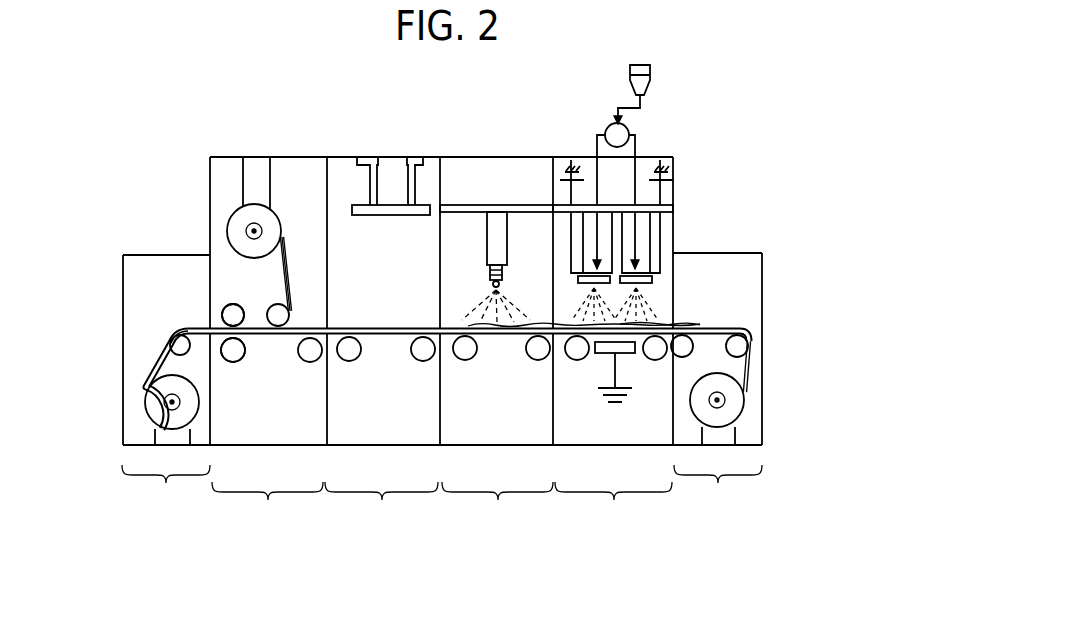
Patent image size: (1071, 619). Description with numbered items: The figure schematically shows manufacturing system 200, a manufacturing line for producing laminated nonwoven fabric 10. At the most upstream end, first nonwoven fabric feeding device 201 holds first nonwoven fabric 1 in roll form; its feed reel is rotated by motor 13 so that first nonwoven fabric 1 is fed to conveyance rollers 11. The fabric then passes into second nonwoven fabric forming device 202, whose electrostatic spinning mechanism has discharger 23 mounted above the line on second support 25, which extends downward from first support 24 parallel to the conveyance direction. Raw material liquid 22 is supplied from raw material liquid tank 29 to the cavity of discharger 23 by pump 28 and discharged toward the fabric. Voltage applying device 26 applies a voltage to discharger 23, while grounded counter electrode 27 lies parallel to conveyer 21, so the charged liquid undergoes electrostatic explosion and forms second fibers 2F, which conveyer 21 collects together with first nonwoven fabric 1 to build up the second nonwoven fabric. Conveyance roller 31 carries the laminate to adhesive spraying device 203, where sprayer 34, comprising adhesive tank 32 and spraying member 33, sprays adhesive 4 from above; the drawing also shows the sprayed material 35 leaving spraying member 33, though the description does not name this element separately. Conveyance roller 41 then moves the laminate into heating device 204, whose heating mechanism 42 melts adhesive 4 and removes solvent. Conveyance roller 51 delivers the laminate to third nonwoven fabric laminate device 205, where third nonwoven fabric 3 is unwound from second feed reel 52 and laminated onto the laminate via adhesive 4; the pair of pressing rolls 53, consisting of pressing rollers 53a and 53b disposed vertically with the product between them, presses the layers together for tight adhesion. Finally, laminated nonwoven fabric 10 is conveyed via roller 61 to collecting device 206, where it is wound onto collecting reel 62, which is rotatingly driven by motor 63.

The manufacturing system 200 is at (203, 134).
The collecting device 206 is at (166, 384).
The third nonwoven fabric laminate device 205 is at (269, 345).
The heating device 204 is at (382, 345).
The adhesive spraying device 203 is at (497, 345).
The second nonwoven fabric forming device 202 is at (613, 508).
The first nonwoven fabric feeding device 201 is at (717, 383).
The laminated nonwoven fabric 10 is at (160, 344).
The roller 61 is at (163, 330).
The collecting reel 62 is at (150, 400).
The motor 63 is at (165, 437).
The second feed reel 52 is at (233, 215).
The first nonwoven fabric 1 is at (285, 240).
The third nonwoven fabric 3 is at (291, 262).
The motor 13 is at (725, 437).
The pair of pressing rolls 53 is at (108, 197).
The pressing roller 53a is at (225, 307).
The pressing roller 53b is at (224, 341).
The conveyance roller 51 is at (304, 358).
The conveyance roller 41 is at (416, 359).
The heating mechanism 42 is at (358, 200).
The sprayer 34 is at (537, 128).
The adhesive tank 32 is at (492, 225).
The spraying member 33 is at (504, 272).
The sprayed material 35 is at (473, 293).
The adhesive 4 is at (480, 323).
The conveyance roller 31 is at (530, 358).
The raw material liquid tank 29 is at (641, 63).
The raw material liquid 22 is at (646, 85).
The pump 28 is at (630, 131).
The voltage applying device 26 is at (666, 184).
The first support 24 is at (664, 215).
The discharger 23 is at (650, 280).
The second support 25 is at (655, 242).
The second fibers 2F is at (655, 302).
The conveyer 21 is at (588, 357).
The counter electrode 27 is at (622, 355).
The conveyance rollers 11 is at (684, 344).